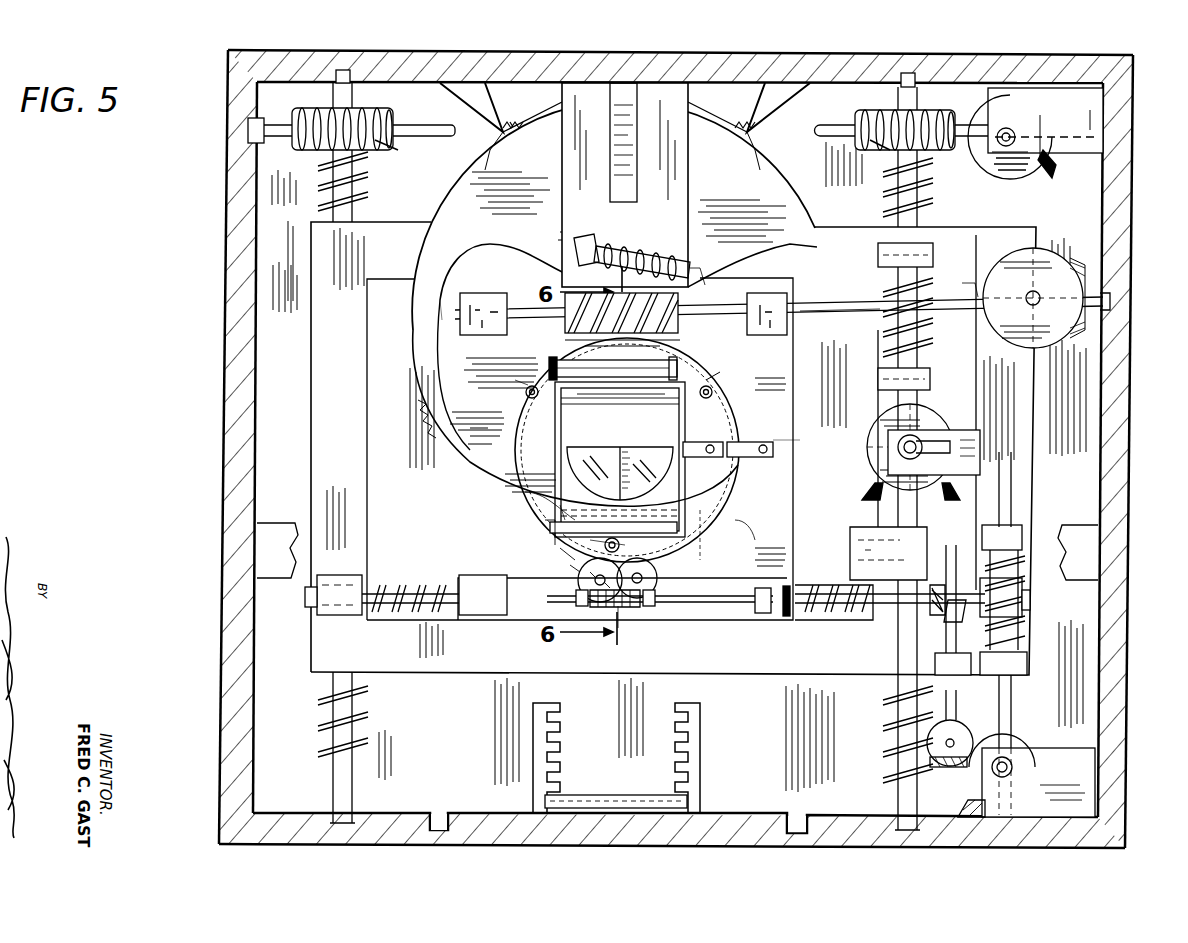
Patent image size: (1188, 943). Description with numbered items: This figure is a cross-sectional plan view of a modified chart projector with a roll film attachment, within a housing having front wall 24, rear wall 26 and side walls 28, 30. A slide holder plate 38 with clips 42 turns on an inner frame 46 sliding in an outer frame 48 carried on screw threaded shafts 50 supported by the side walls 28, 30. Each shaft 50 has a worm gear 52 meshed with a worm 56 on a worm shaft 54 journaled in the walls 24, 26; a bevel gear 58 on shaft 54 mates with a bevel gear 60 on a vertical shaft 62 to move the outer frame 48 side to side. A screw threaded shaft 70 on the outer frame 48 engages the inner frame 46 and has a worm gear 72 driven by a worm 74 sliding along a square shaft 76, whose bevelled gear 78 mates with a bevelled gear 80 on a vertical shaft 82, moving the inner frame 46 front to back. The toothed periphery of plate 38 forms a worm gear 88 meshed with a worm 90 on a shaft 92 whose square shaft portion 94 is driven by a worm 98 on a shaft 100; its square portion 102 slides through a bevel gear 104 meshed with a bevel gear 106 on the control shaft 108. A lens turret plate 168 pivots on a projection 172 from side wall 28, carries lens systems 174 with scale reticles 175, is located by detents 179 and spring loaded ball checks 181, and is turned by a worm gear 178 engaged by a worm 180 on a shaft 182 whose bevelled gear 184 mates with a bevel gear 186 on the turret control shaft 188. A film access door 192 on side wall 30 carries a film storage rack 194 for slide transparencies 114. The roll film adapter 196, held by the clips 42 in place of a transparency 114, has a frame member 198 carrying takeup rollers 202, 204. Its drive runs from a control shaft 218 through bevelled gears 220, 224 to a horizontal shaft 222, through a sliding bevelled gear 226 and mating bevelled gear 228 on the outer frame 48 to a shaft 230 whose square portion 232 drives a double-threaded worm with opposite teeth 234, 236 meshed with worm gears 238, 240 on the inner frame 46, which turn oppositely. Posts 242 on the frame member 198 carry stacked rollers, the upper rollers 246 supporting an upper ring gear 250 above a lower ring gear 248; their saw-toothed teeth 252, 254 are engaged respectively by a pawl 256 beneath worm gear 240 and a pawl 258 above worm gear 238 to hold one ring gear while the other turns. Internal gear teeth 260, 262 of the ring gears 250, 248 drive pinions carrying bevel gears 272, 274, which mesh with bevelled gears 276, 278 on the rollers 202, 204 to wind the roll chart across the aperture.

The front wall 24 is at (1133, 122).
The rear wall 26 is at (228, 168).
The side wall 28 is at (900, 56).
The side wall 30 is at (920, 850).
The slide holder plate 38 is at (722, 431).
The clips 42 is at (700, 440).
The inner frame 46 is at (795, 438).
The outer frame 48 is at (412, 266).
The screw threaded shafts 50 is at (353, 183).
The worm gear 52 is at (400, 151).
The worm shaft 54 is at (428, 133).
The worms 56 is at (380, 106).
The bevel gear 58 is at (1054, 176).
The mating bevel gear 60 is at (998, 176).
The shaft 62 is at (1007, 128).
The screw threaded shaft 70 is at (410, 578).
The worm gear 72 is at (985, 578).
The worm 74 is at (1028, 585).
The square shaft 76 is at (999, 489).
The bevelled gear 78 is at (970, 820).
The mating bevelled gear 80 is at (1022, 735).
The vertical shaft 82 is at (1008, 757).
The worm gear 88 is at (672, 345).
The worm 90 is at (680, 302).
The shaft 92 is at (745, 325).
The square shaft portion 94 is at (838, 318).
The worm 98 is at (932, 350).
The shaft 100 is at (935, 248).
The square or splined portion 102 is at (932, 392).
The bevel gear 104 is at (943, 503).
The mating bevel gear 106 is at (938, 418).
The control shaft 108 is at (955, 445).
The slide transparency 114 is at (638, 795).
The turret plate 168 is at (722, 196).
The projection 172 is at (672, 105).
The lens systems 174 is at (481, 433).
The scale reticle 175 is at (683, 457).
The worm gear 178 is at (560, 272).
The detents 179 is at (512, 134).
The worm 180 is at (636, 248).
The spring loaded ball checks 181 is at (624, 161).
The shaft 182 is at (735, 250).
The bevelled gear 184 is at (1100, 262).
The bevel gear 186 is at (1055, 258).
The turret control shaft 188 is at (1038, 304).
The film access door 192 is at (770, 848).
The film storage rack 194 is at (702, 755).
The roll film adapter 196 is at (733, 374).
The frame member 198 is at (740, 462).
The takeup roller 202 is at (575, 360).
The takeup roller 204 is at (680, 540).
The control shaft 218 is at (953, 740).
The bevelled gear 220 is at (885, 742).
The shaft 222 is at (978, 545).
The bevelled gear 224 is at (938, 768).
The bevelled gear 226 is at (950, 625).
The mating bevelled gear 228 is at (930, 612).
The shaft 230 is at (750, 615).
The square shaft portion 232 is at (702, 620).
The worm teeth 234 is at (630, 607).
The worm teeth 236 is at (637, 635).
The worm gear 238 is at (643, 603).
The worm gear 240 is at (578, 588).
The posts 242 is at (740, 404).
The upper roller members 246 is at (526, 390).
The lower ring gear 248 is at (560, 553).
The upper ring gear 250 is at (525, 492).
The teeth 252 is at (572, 568).
The teeth 254 is at (685, 562).
The ratchet arm or pawl 256 is at (572, 600).
The ratchet arm or pawl 258 is at (657, 584).
The internal gear teeth 260 is at (680, 404).
The internal gear teeth 262 is at (572, 404).
The bevel gear 272 is at (548, 358).
The bevel gear 274 is at (603, 493).
The mating bevelled gear 276 is at (620, 461).
The mating bevelled gear 278 is at (526, 533).